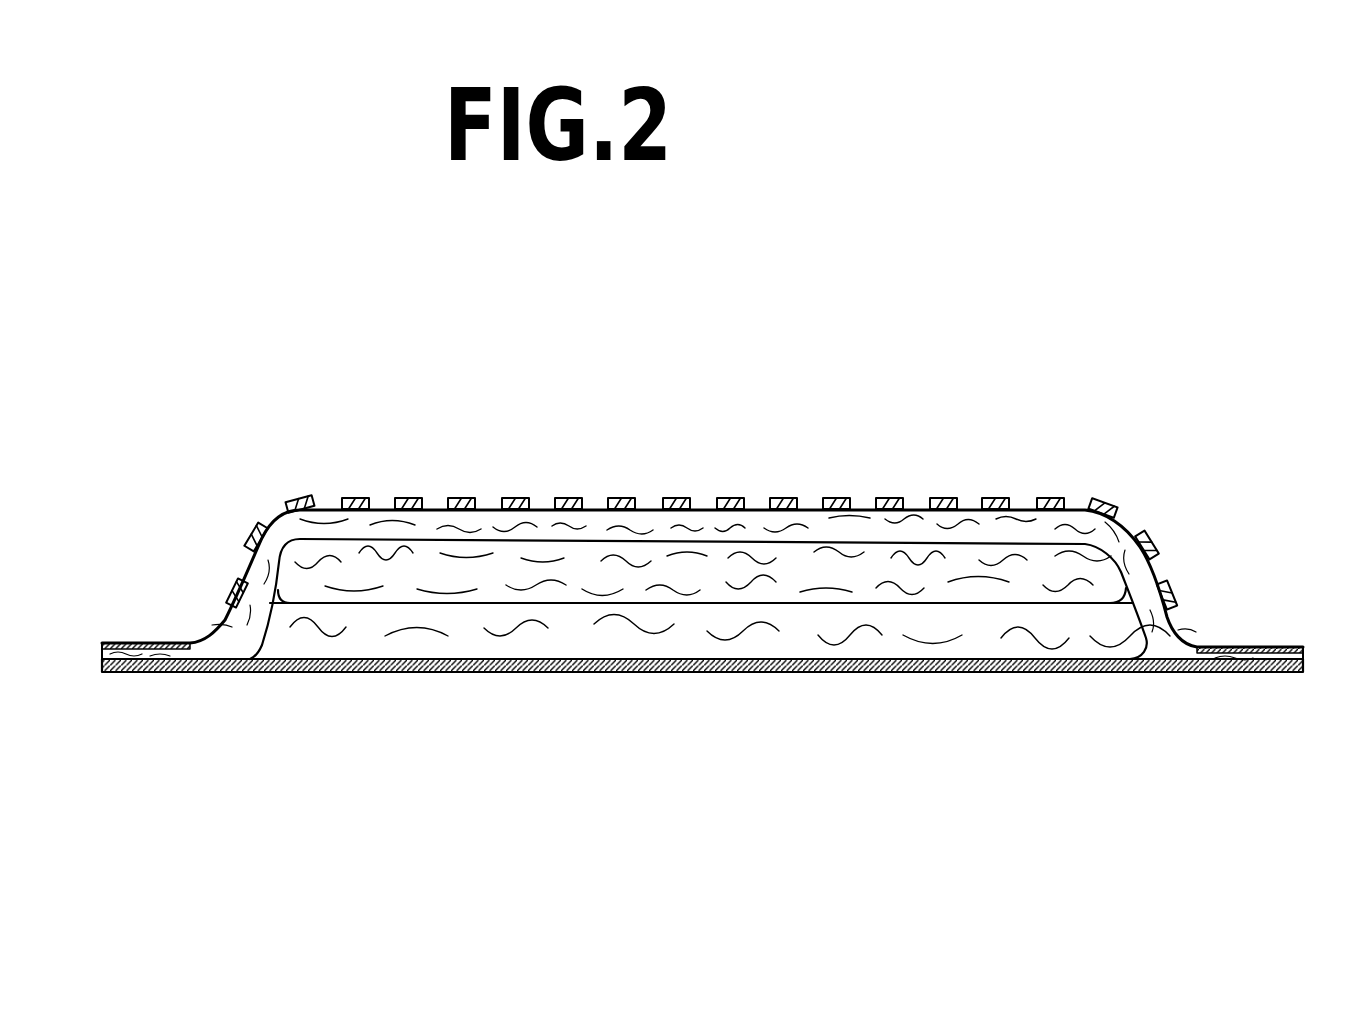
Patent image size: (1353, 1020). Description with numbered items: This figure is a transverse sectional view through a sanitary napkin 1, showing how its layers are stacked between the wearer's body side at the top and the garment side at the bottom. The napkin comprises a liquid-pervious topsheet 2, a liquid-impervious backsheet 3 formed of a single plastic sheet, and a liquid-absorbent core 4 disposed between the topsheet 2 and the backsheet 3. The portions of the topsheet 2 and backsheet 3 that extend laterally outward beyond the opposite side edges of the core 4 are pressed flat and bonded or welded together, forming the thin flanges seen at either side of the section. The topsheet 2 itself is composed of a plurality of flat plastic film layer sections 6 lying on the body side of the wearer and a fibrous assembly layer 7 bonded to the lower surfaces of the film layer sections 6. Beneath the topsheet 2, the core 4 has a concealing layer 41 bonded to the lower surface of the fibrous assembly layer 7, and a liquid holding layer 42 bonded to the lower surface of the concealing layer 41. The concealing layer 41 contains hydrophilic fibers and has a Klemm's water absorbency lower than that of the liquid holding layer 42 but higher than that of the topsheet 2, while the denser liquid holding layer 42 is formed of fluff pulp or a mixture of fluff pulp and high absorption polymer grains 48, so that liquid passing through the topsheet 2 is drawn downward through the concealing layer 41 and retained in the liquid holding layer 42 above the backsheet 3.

The sanitary napkin 1 is at (832, 233).
The topsheet 2 is at (988, 415).
The backsheet 3 is at (885, 673).
The core 4 is at (1253, 482).
The film layer sections 6 is at (788, 498).
The fibrous assembly layer 7 is at (882, 527).
The concealing layer 41 is at (1043, 562).
The liquid holding layer 42 is at (1120, 617).
The high absorption polymer grains 48 is at (423, 643).